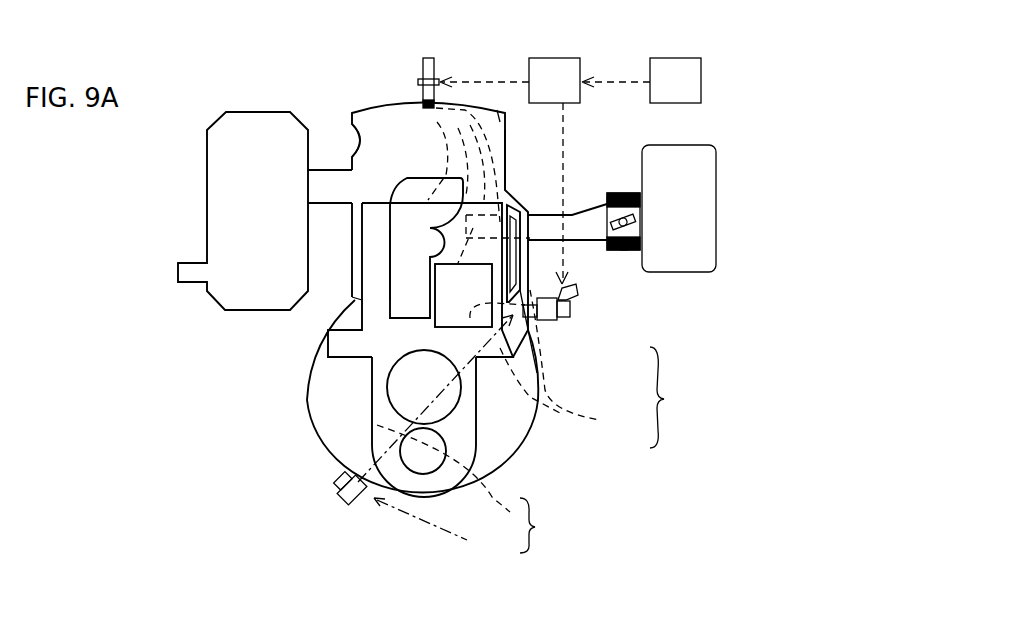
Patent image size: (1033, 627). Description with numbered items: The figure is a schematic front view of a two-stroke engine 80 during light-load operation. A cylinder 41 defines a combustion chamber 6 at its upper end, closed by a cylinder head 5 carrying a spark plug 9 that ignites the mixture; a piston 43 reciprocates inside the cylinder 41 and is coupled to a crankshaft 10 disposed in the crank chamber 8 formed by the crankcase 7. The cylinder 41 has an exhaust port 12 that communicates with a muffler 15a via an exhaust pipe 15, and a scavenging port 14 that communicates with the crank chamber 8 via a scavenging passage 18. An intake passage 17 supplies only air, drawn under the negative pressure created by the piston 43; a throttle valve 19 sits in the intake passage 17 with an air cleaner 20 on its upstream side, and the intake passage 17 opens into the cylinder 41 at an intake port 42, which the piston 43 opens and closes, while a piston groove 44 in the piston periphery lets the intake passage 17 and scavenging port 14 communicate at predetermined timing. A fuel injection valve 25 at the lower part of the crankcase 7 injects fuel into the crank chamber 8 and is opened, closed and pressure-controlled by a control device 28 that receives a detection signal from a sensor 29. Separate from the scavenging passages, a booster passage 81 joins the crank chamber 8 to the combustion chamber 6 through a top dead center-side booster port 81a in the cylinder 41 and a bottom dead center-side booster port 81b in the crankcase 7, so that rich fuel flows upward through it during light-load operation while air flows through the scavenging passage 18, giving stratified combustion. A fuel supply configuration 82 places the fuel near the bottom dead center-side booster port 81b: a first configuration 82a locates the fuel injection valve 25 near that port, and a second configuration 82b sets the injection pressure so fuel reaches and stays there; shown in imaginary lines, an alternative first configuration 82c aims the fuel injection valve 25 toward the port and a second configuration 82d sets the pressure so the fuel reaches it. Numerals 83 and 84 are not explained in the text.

The muffler 15a is at (250, 112).
The intake valve 83 is at (353, 138).
The combustion chamber 6 is at (393, 131).
The exhaust pipe 15 is at (327, 170).
The scavenging port 14 is at (427, 200).
The exhaust port 12 is at (352, 183).
The scavenging passage 18 is at (407, 248).
The piston 43 is at (350, 300).
The engine 80 is at (392, 95).
The spark plug 9 is at (434, 72).
The cylinder head 5 is at (469, 100).
The exhaust valve 84 is at (497, 108).
The cylinder 41 is at (508, 138).
The top dead center-side booster port 81a is at (517, 202).
The intake passage 17 is at (624, 192).
The throttle valve 19 is at (628, 251).
The air cleaner 20 is at (718, 188).
The control device 28 is at (568, 93).
The sensor 29 is at (689, 93).
The intake port 42 is at (482, 271).
The booster passage 81 is at (531, 255).
The first configuration 82a is at (543, 323).
The fuel injection valve 25 is at (573, 315).
The second configuration 82b is at (587, 360).
The bottom dead center-side booster port 81b is at (537, 348).
The fuel supply configuration 82 is at (607, 450).
The crankcase 7 is at (309, 415).
The crank chamber 8 is at (347, 414).
The crankshaft 10 is at (410, 392).
The piston groove 44 is at (480, 362).
The first configuration 82c is at (458, 434).
The second configuration 82d is at (468, 437).